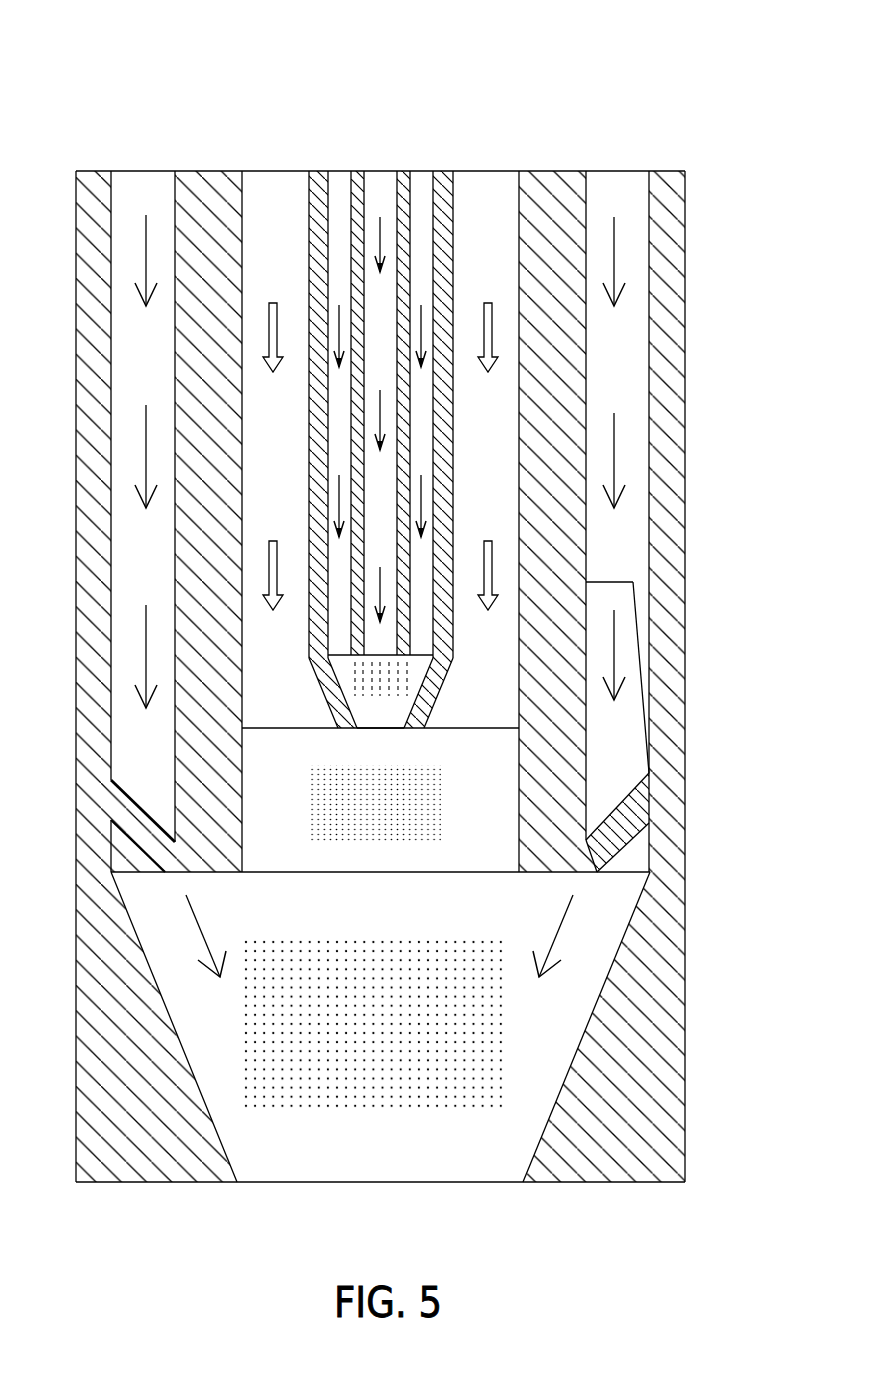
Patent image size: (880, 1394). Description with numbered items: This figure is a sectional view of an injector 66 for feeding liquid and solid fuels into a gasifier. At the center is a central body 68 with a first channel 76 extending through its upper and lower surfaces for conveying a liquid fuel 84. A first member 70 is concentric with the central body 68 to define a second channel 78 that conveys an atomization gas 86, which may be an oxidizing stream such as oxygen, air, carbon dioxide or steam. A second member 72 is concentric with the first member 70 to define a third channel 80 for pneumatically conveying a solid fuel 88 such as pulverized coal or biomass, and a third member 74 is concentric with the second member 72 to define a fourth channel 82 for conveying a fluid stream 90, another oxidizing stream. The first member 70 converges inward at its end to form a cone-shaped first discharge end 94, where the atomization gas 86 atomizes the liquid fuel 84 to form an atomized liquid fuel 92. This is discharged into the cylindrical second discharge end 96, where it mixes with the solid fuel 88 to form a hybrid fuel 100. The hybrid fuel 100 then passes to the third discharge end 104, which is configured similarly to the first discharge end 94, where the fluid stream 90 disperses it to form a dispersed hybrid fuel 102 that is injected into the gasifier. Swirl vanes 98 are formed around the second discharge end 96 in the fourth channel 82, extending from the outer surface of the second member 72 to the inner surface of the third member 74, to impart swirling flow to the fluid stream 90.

The injector 66 is at (722, 53).
The central body 68 is at (357, 172).
The first member 70 is at (403, 172).
The second member 72 is at (558, 172).
The third member 74 is at (676, 172).
The first channel 76 is at (330, 675).
The second channel 78 is at (340, 608).
The third channel 80 is at (272, 172).
The fourth channel 82 is at (132, 345).
The liquid fuel 84 is at (382, 236).
The atomization gas 86 is at (338, 497).
The solid fuel 88 is at (493, 331).
The fluid stream 90 is at (616, 458).
The atomized liquid fuel 92 is at (364, 664).
The first discharge end 94 is at (392, 713).
The second discharge end 96 is at (492, 818).
The swirl vanes 98 is at (634, 815).
The hybrid fuel 100 is at (345, 775).
The dispersed hybrid fuel 102 is at (375, 945).
The third discharge end 104 is at (400, 1158).